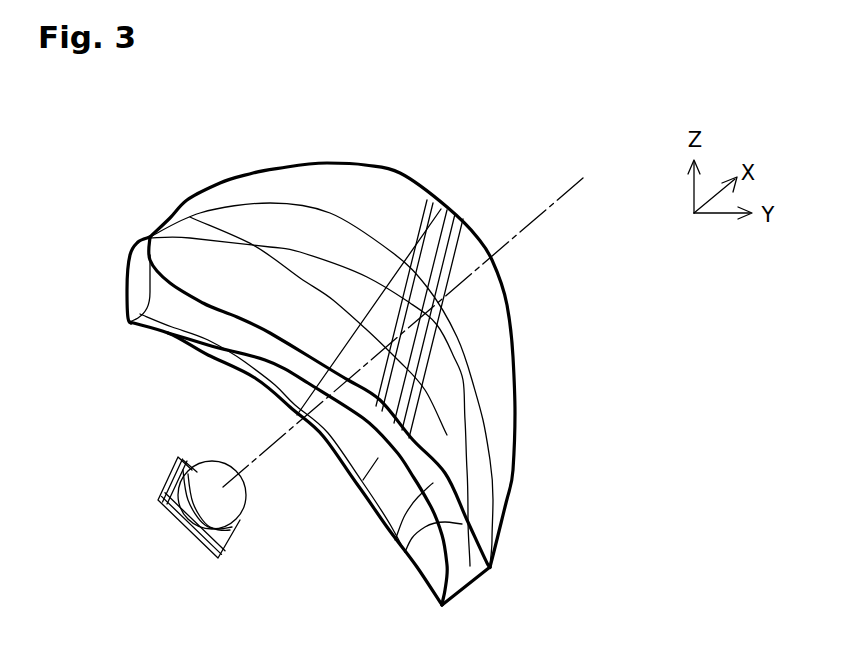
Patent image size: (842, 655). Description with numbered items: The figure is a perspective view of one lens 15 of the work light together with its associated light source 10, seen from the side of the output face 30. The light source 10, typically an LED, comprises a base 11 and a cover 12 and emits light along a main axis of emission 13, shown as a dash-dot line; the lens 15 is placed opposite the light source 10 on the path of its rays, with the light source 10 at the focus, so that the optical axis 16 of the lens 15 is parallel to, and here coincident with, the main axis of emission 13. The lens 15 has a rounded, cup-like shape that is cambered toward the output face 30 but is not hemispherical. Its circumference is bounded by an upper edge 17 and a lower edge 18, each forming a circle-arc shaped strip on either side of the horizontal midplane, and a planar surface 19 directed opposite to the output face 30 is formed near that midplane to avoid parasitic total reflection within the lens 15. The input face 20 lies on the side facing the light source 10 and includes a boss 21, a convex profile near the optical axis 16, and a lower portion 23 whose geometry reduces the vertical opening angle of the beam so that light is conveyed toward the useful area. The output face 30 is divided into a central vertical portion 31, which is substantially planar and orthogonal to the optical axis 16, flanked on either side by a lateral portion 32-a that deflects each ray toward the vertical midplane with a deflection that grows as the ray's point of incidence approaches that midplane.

The light source 10 is at (163, 507).
The base 11 is at (175, 512).
The cover 12 is at (203, 470).
The main axis of emission 13 is at (442, 332).
The lens 15 is at (203, 162).
The optical axis 16 is at (527, 230).
The upper edge 17 is at (296, 163).
The lower edge 18 is at (329, 483).
The planar surface 19 is at (140, 285).
The input face 20 is at (296, 459).
The boss 21 is at (297, 417).
The lower portion 23 is at (378, 458).
The output face 30 is at (494, 423).
The central vertical portion 31 is at (442, 207).
The lateral portion 32-a is at (377, 213).